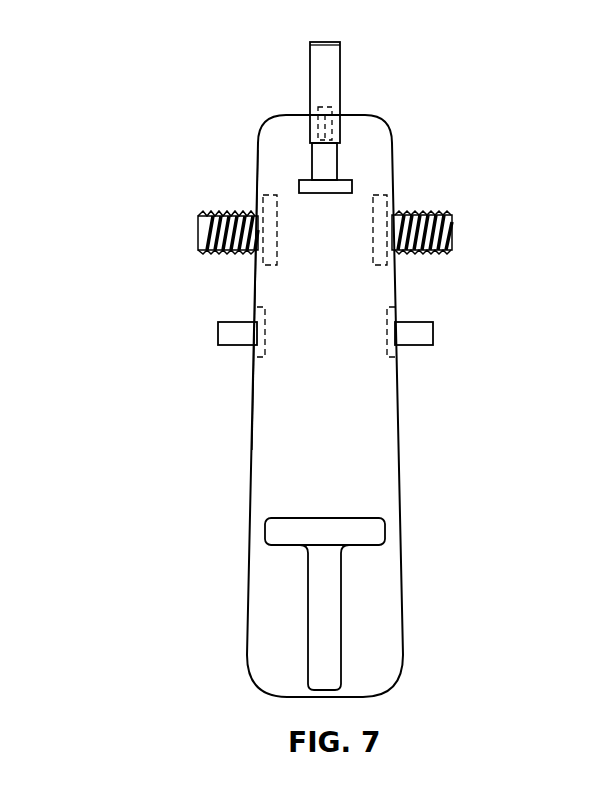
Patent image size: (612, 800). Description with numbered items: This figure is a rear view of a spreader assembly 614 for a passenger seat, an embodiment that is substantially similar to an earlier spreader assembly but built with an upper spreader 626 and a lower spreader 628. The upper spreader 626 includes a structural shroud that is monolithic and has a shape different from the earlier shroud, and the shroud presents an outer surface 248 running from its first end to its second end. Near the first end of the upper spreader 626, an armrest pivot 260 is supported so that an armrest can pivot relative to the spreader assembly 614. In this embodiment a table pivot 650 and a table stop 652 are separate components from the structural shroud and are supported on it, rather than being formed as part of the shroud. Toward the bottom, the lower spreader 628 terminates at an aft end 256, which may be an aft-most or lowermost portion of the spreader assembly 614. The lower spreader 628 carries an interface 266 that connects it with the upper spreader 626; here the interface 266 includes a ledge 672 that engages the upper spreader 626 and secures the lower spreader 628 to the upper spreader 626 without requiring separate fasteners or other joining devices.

The spreader assembly 614 is at (120, 130).
The outer surface 248 is at (382, 438).
The upper spreader 626 is at (263, 438).
The armrest pivot 260 is at (322, 87).
The table stop 652 is at (435, 233).
The table pivot 650 is at (228, 328).
The lower spreader 628 is at (278, 537).
The ledge 672 is at (308, 523).
The interface 266 is at (328, 535).
The aft end 256 is at (318, 628).